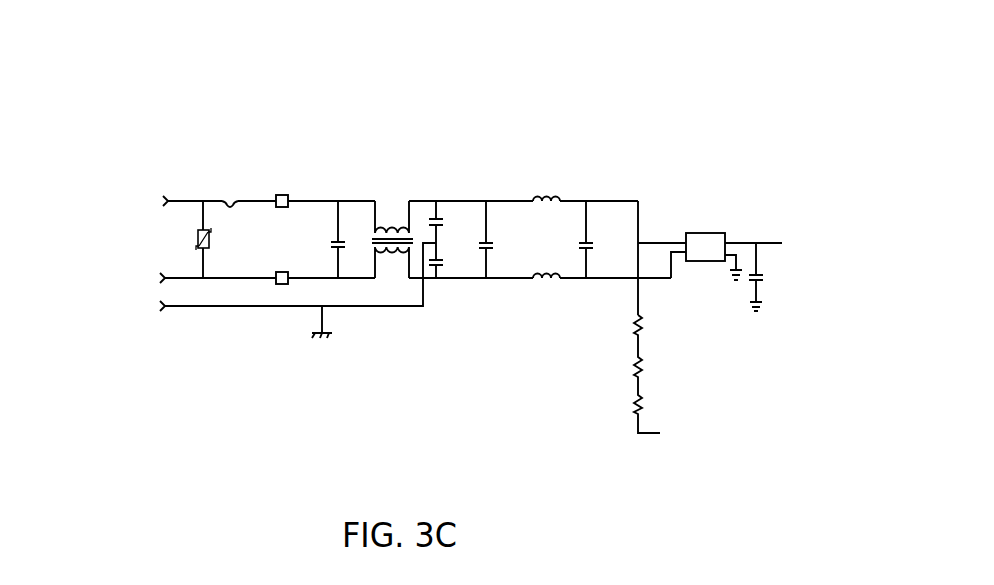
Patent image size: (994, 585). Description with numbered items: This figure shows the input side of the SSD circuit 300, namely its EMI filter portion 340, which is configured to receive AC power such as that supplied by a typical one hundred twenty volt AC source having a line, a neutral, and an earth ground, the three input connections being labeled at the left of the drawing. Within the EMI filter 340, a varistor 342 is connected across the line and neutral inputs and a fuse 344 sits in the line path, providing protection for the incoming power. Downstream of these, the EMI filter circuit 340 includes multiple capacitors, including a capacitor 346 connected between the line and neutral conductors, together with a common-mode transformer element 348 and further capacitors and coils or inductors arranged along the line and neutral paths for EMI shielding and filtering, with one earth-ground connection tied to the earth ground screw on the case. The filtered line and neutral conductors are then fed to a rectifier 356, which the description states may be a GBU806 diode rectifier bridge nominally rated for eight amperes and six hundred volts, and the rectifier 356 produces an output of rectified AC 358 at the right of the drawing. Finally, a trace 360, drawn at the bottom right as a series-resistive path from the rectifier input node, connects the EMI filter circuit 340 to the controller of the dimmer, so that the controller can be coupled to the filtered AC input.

The SSD circuit 300 is at (113, 41).
The EMI filter portion 340 is at (192, 120).
The varistor 342 is at (197, 238).
The fuse 344 is at (227, 196).
The capacitor 346 is at (342, 238).
The common mode choke transformer 348 is at (392, 223).
The rectifier 356 is at (707, 233).
The rectified AC 358 is at (782, 243).
The trace 360 is at (660, 433).